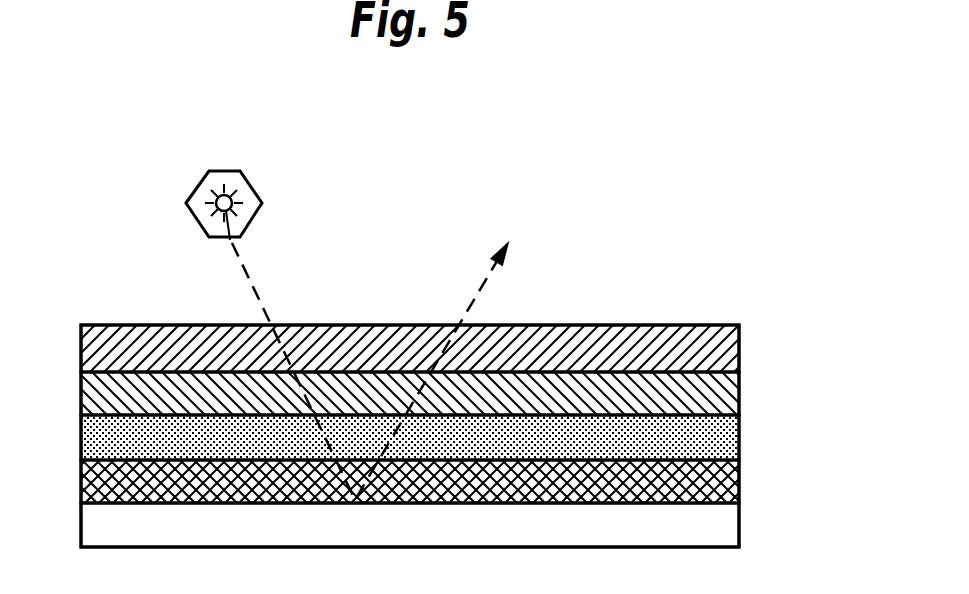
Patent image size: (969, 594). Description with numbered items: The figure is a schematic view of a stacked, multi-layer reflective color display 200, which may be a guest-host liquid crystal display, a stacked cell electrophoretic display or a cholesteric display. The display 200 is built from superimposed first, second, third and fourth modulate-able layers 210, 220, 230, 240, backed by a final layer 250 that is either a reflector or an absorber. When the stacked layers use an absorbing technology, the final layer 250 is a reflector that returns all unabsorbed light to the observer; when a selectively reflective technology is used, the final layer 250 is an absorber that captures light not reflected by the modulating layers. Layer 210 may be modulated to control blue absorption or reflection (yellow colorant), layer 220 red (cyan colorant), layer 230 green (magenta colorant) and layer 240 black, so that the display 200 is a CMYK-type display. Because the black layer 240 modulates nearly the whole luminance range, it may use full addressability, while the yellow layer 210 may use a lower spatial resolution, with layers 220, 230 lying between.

The stacked, multi-layer reflective color display 200 is at (768, 212).
The first modulate-able layer 210 is at (739, 343).
The second modulate-able layer 220 is at (739, 390).
The third modulate-able layer 230 is at (739, 435).
The fourth modulate-able layer 240 is at (739, 482).
The final layer 250 is at (739, 528).